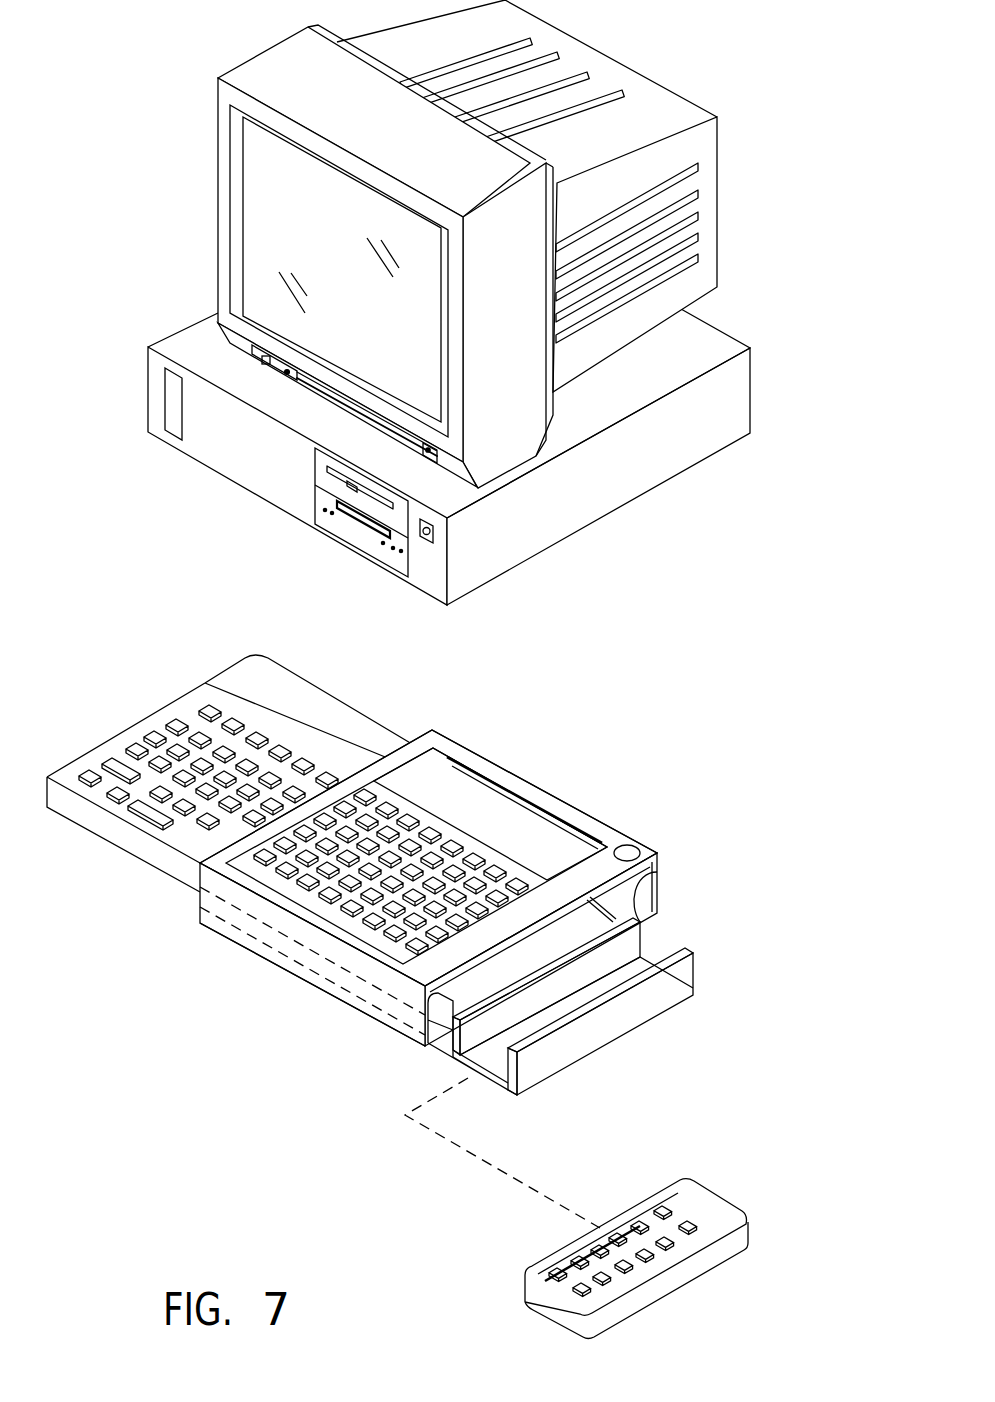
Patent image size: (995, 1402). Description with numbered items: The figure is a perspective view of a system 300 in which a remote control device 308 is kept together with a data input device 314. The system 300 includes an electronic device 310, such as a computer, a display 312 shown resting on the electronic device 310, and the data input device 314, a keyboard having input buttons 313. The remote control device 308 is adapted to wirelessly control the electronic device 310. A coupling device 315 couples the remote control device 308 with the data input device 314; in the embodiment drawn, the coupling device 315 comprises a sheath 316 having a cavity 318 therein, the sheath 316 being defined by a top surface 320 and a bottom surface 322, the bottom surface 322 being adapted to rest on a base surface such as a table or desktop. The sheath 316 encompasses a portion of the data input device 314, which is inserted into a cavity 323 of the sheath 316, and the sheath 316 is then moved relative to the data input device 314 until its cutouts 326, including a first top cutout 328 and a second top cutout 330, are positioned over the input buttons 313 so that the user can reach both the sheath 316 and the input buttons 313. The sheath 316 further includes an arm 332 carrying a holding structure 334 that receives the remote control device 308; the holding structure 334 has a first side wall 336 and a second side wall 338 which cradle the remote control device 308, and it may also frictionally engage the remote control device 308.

The system 300 is at (175, 1048).
The remote control device 308 is at (715, 1267).
The electronic device 310 is at (147, 380).
The display 312 is at (218, 192).
The input buttons 313 is at (427, 832).
The data input device 314 is at (123, 730).
The coupling device 315 is at (242, 930).
The sheath 316 is at (573, 813).
The cavity 318 is at (380, 1010).
The top surface 320 is at (432, 740).
The bottom surface 322 is at (340, 1002).
The cavity 323 is at (280, 952).
The cutouts 326 is at (510, 788).
The first top cutout 328 is at (455, 757).
The second top cutout 330 is at (632, 846).
The arm 332 is at (430, 1047).
The holding structure 334 is at (708, 944).
The first side wall 336 is at (632, 943).
The second side wall 338 is at (512, 1068).